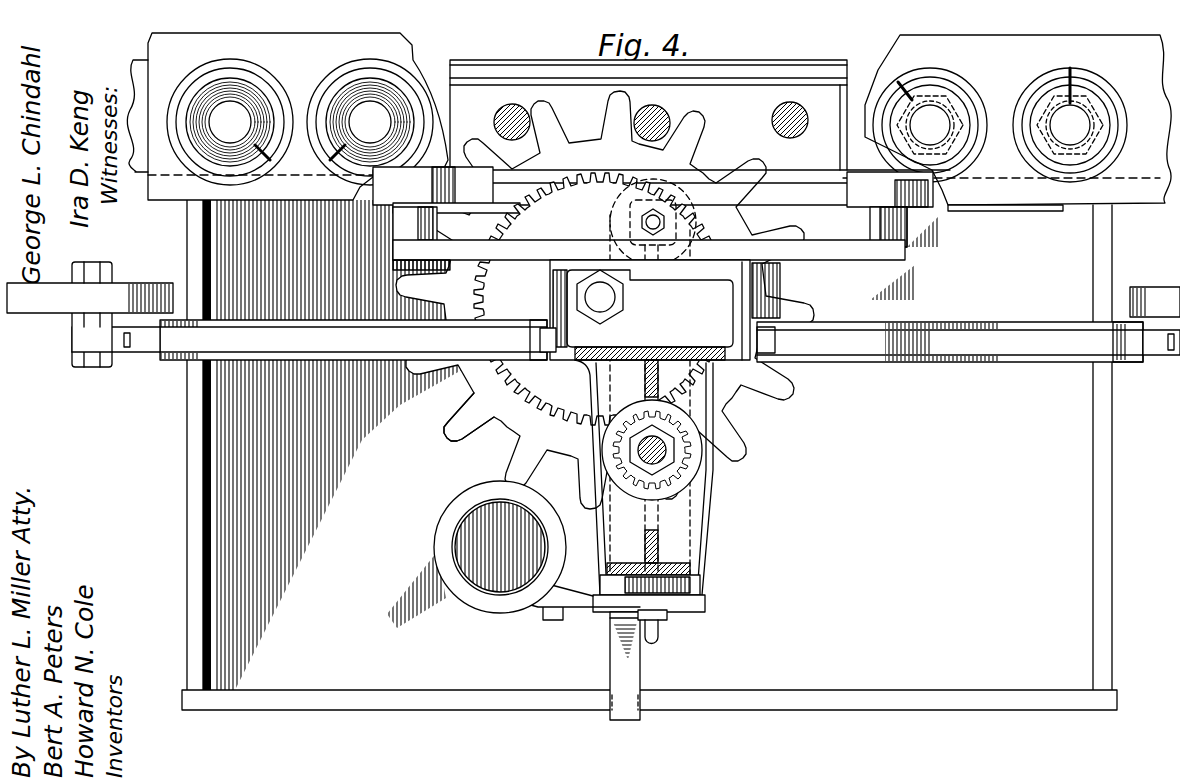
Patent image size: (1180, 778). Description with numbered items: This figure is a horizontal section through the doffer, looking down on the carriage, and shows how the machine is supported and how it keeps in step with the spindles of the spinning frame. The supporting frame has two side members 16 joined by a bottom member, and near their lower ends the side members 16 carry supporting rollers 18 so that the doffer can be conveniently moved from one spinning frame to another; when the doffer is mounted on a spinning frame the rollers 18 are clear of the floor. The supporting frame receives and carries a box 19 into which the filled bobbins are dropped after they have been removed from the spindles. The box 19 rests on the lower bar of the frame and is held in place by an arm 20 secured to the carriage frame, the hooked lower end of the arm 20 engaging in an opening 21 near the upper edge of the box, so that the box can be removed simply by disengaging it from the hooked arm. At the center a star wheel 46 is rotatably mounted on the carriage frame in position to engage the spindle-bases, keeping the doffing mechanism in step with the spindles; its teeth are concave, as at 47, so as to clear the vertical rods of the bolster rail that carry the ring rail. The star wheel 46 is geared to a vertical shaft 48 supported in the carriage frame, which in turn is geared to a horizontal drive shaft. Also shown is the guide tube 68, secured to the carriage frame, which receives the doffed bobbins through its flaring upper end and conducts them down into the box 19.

The side members 16 is at (626, 341).
The supporting rollers 18 is at (37, 286).
The box 19 is at (1101, 557).
The arm 20 is at (637, 673).
The opening 21 is at (607, 693).
The star wheel 46 is at (447, 426).
The concave teeth 47 is at (580, 124).
The vertical shaft 48 is at (664, 457).
The guide tube 68 is at (480, 588).